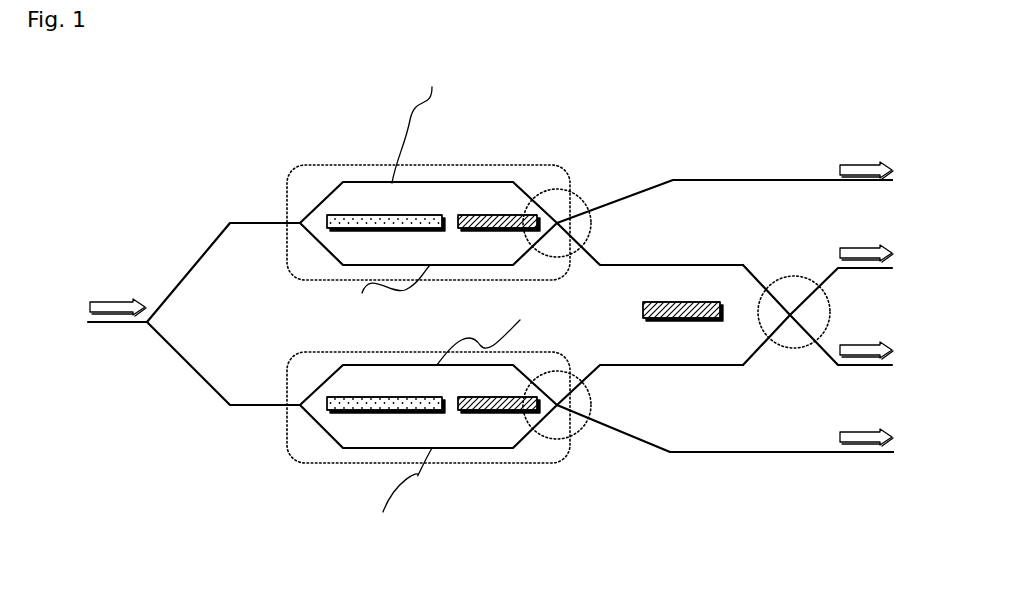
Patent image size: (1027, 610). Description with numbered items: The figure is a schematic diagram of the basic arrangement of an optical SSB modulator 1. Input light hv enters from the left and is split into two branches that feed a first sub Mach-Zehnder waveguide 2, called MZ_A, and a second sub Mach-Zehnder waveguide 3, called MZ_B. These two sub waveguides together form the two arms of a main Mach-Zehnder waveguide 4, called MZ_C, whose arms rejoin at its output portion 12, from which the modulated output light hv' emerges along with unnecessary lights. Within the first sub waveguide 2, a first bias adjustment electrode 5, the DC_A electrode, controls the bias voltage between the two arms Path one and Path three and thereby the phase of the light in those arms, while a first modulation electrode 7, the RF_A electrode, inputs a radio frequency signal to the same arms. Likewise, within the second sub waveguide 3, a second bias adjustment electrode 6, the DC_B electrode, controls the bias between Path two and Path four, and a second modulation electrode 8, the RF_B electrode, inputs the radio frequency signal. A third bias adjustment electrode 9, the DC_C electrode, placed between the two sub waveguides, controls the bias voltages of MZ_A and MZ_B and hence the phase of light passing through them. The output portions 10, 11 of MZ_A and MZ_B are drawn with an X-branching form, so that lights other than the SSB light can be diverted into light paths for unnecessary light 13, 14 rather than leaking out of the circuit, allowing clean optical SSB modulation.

The optical SSB modulator 1 is at (490, 329).
The first sub Mach-Zehnder waveguide 2 is at (554, 213).
The second sub Mach-Zehnder waveguide 3 is at (556, 447).
The main Mach-Zehnder waveguide 4 is at (767, 310).
The first bias adjustment electrode 5 is at (498, 215).
The second bias adjustment electrode 6 is at (493, 410).
The first modulation electrode 7 is at (383, 215).
The second modulation electrode 8 is at (380, 410).
The third bias adjustment electrode 9 is at (688, 303).
The output portion of the MZ_A 10 is at (553, 187).
The output portion of the MZ_B 11 is at (547, 440).
The output portion of the MZ_C 12 is at (795, 348).
The light path for unnecessary light 13 is at (750, 180).
The light path for unnecessary light 14 is at (782, 453).